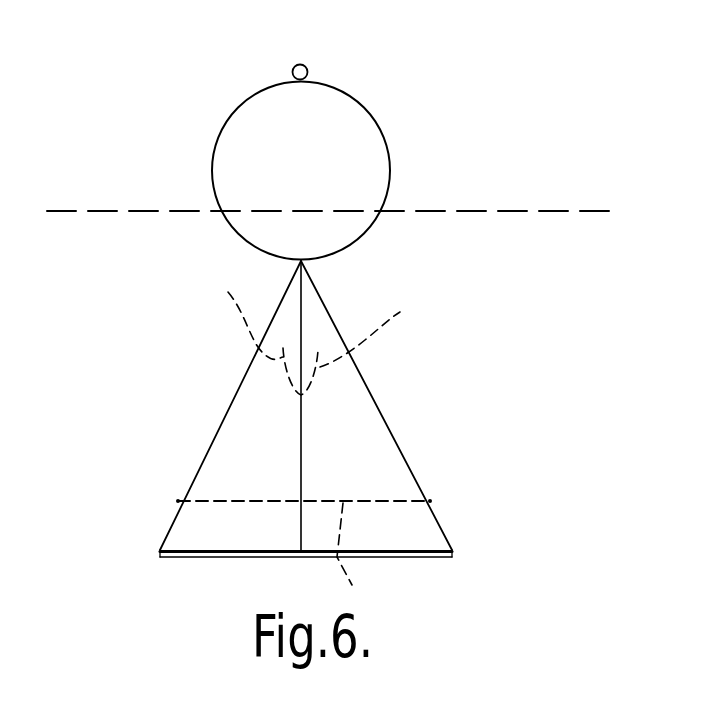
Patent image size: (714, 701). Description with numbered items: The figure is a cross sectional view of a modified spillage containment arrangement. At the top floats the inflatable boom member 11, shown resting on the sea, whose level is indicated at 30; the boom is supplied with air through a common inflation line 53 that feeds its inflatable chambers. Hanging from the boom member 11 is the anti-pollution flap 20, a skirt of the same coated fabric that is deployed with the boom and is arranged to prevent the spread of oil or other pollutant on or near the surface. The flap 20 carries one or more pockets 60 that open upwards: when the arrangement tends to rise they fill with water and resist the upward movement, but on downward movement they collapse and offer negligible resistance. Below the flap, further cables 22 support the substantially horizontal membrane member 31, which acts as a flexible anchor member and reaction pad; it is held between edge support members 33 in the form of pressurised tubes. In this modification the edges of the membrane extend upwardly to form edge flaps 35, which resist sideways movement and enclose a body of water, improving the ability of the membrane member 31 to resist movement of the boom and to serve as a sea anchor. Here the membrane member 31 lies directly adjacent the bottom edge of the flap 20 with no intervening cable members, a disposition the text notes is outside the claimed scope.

The boom member 11 is at (365, 162).
The common inflation line 53 is at (308, 71).
The sea level 30 is at (487, 211).
The pockets 60 is at (320, 334).
The further cables 22 is at (222, 410).
The anti-pollution flap 20 is at (302, 442).
The edge flaps 35 is at (440, 522).
The edge support members 33 is at (361, 554).
The membrane member 31 is at (288, 567).